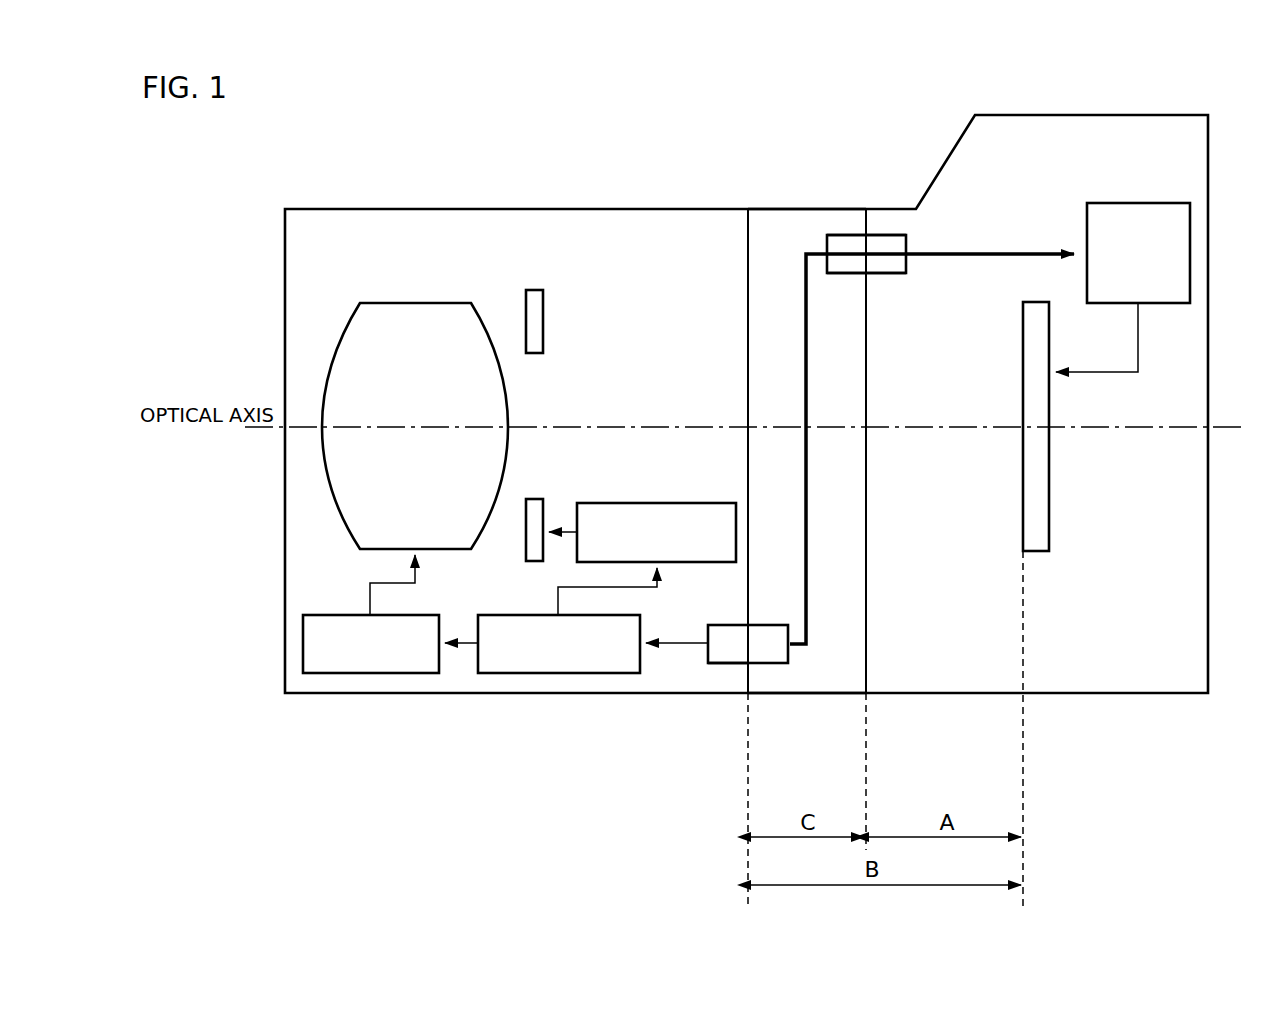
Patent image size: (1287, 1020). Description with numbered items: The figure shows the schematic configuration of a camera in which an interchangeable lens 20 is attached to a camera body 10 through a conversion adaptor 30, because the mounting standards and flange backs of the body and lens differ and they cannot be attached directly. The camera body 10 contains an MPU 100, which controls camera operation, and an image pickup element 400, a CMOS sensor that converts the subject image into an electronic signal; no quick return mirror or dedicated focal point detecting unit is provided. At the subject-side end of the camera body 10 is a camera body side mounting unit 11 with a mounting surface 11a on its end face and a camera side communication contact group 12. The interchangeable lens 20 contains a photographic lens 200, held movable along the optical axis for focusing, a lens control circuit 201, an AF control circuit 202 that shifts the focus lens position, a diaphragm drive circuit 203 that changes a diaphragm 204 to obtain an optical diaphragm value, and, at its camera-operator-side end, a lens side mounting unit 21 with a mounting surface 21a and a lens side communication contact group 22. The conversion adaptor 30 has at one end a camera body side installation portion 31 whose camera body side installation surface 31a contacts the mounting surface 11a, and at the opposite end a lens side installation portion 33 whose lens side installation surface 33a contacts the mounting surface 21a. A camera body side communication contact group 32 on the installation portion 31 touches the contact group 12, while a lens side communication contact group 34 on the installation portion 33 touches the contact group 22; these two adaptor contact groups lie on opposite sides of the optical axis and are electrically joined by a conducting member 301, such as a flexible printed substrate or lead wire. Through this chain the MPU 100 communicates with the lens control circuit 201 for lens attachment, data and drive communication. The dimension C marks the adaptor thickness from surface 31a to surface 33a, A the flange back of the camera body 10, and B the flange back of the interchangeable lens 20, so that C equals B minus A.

The camera body 10 is at (962, 135).
The camera body side mounting unit 11 is at (880, 682).
The mounting surface 11a is at (866, 642).
The camera side communication contact group 12 is at (893, 273).
The interchangeable lens 20 is at (396, 209).
The lens side mounting unit 21 is at (731, 225).
The mounting surface 21a is at (748, 305).
The lens side communication contact group 22 is at (723, 657).
The conversion adaptor 30 is at (801, 228).
The camera body side installation portion 31 is at (857, 222).
The camera body side installation surface 31a is at (870, 223).
The camera body side communication contact group 32 is at (848, 273).
The lens side installation portion 33 is at (758, 682).
The lens side installation surface 33a is at (747, 678).
The lens side communication contact group 34 is at (771, 625).
The MPU 100 is at (1139, 203).
The photographic lens 200 is at (415, 303).
The lens control circuit 201 is at (522, 673).
The AF control circuit 202 is at (372, 673).
The diaphragm drive circuit 203 is at (685, 503).
The diaphragm 204 is at (535, 290).
The conducting member 301 is at (806, 470).
The image pickup element 400 is at (1050, 478).